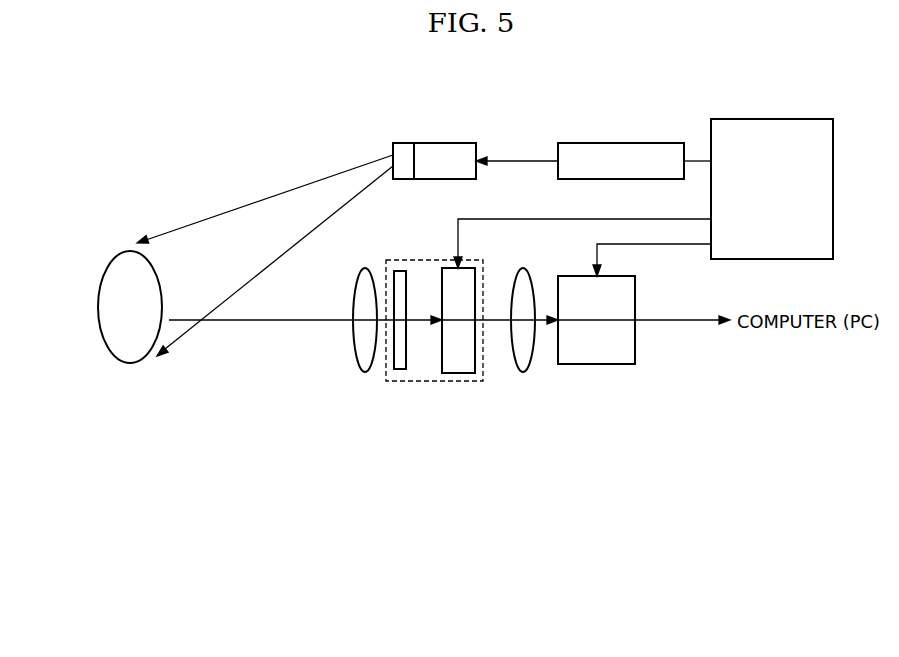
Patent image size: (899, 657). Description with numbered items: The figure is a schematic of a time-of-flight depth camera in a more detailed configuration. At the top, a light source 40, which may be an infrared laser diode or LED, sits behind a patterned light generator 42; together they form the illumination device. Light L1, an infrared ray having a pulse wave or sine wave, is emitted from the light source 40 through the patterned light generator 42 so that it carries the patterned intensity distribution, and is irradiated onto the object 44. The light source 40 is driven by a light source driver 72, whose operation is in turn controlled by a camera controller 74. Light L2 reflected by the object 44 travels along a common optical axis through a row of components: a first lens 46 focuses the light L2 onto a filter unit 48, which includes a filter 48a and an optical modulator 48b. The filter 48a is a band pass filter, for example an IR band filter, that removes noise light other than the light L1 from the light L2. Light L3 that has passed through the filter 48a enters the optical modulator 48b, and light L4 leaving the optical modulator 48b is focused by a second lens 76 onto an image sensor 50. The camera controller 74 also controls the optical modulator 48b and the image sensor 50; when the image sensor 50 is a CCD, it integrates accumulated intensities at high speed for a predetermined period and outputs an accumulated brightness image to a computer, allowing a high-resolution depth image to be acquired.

The light source 40 is at (448, 143).
The patterned light generator 42 is at (405, 143).
The object 44 is at (98, 308).
The first lens 46 is at (367, 373).
The filter unit 48 is at (435, 260).
The filter 48a is at (400, 370).
The optical modulator 48b is at (457, 374).
The image sensor 50 is at (597, 365).
The light source driver 72 is at (623, 142).
The camera controller 74 is at (775, 117).
The second lens 76 is at (523, 373).
The light L1 is at (265, 200).
The light L2 is at (274, 322).
The light L3 is at (417, 322).
The light L4 is at (498, 322).